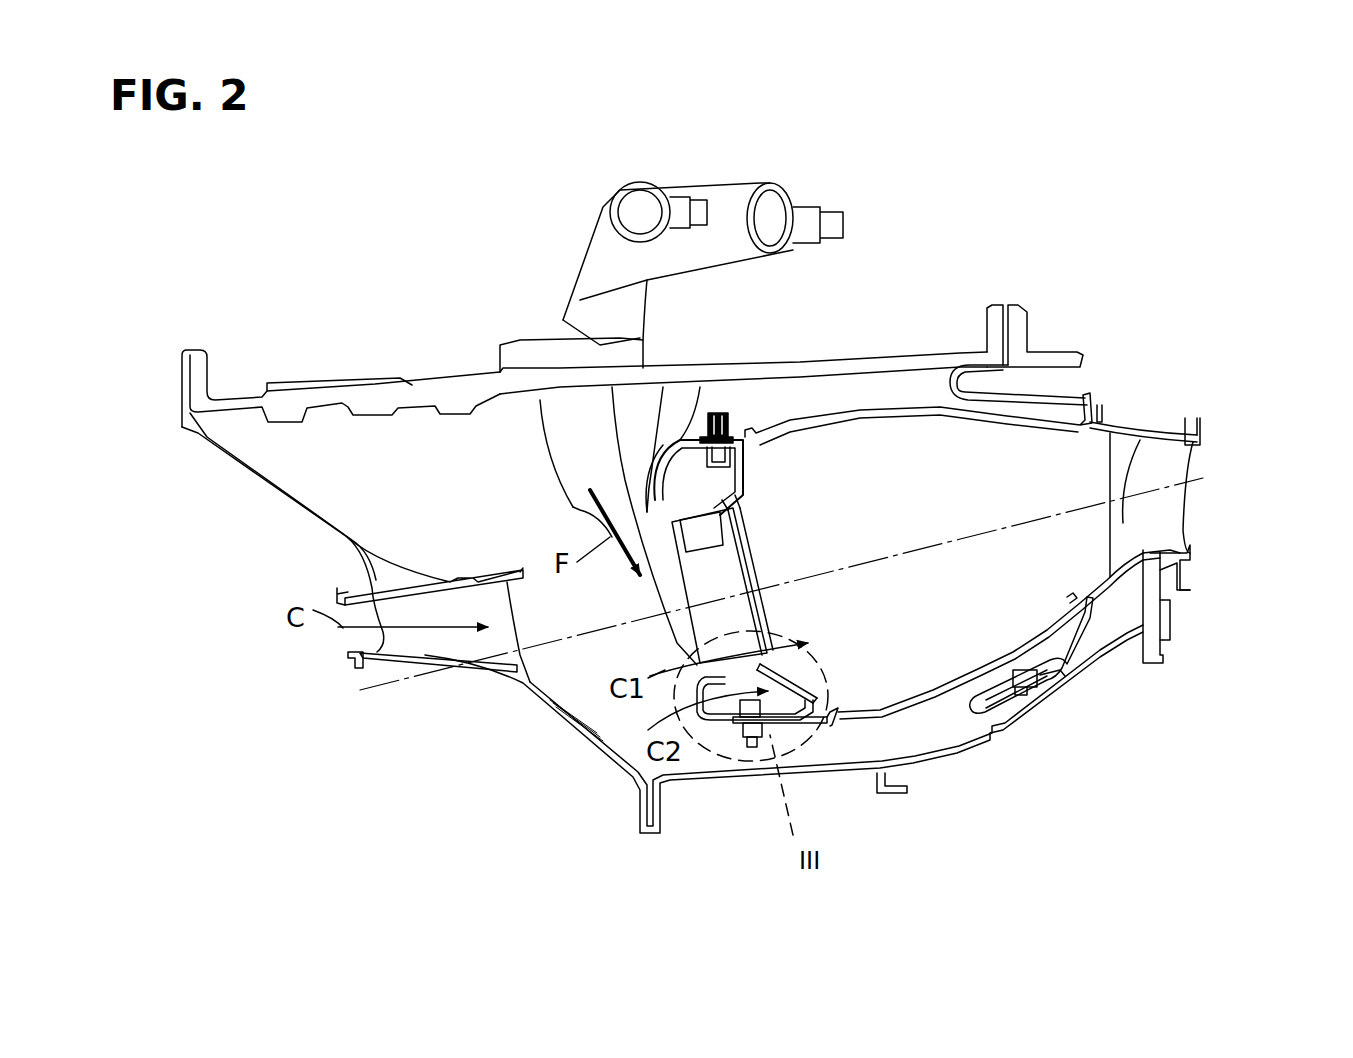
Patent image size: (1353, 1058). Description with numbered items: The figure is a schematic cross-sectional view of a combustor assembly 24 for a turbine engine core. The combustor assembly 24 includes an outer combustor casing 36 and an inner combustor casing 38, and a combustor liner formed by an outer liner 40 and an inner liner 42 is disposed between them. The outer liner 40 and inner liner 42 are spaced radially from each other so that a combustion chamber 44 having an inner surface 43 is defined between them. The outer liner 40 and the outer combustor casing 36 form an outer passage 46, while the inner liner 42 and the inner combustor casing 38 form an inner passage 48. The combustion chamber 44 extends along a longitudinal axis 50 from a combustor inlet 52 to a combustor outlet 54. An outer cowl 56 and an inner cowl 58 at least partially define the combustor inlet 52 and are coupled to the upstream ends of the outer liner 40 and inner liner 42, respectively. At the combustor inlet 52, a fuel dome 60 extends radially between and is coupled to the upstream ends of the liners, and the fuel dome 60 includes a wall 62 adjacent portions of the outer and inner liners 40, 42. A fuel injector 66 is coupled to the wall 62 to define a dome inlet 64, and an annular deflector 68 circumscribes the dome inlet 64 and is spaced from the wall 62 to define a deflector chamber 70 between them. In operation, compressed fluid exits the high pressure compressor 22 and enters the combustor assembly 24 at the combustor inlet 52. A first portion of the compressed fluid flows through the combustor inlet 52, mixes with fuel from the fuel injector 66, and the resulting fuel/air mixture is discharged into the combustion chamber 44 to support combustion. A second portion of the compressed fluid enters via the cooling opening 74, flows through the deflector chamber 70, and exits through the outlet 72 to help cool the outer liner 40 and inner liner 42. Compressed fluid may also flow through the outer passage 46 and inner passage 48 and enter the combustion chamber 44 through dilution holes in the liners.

The high pressure compressor 22 is at (349, 490).
The combustor assembly 24 is at (866, 309).
The outer combustor casing 36 is at (815, 365).
The inner combustor casing 38 is at (835, 782).
The outer liner 40 is at (883, 407).
The inner liner 42 is at (913, 705).
The inner surface 43 is at (945, 685).
The combustion chamber 44 is at (964, 507).
The outer passage 46 is at (865, 396).
The inner passage 48 is at (880, 741).
The longitudinal axis 50 is at (1133, 462).
The combustor inlet 52 is at (620, 643).
The combustor outlet 54 is at (1087, 536).
The outer cowl 56 is at (657, 470).
The inner cowl 58 is at (713, 705).
The fuel dome 60 is at (718, 481).
The wall 62 is at (747, 470).
The dome inlet 64 is at (778, 573).
The fuel injector 66 is at (563, 507).
The deflector 68 is at (792, 690).
The deflector chamber 70 is at (775, 760).
The outlet 72 is at (826, 706).
The cooling opening 74 is at (795, 712).